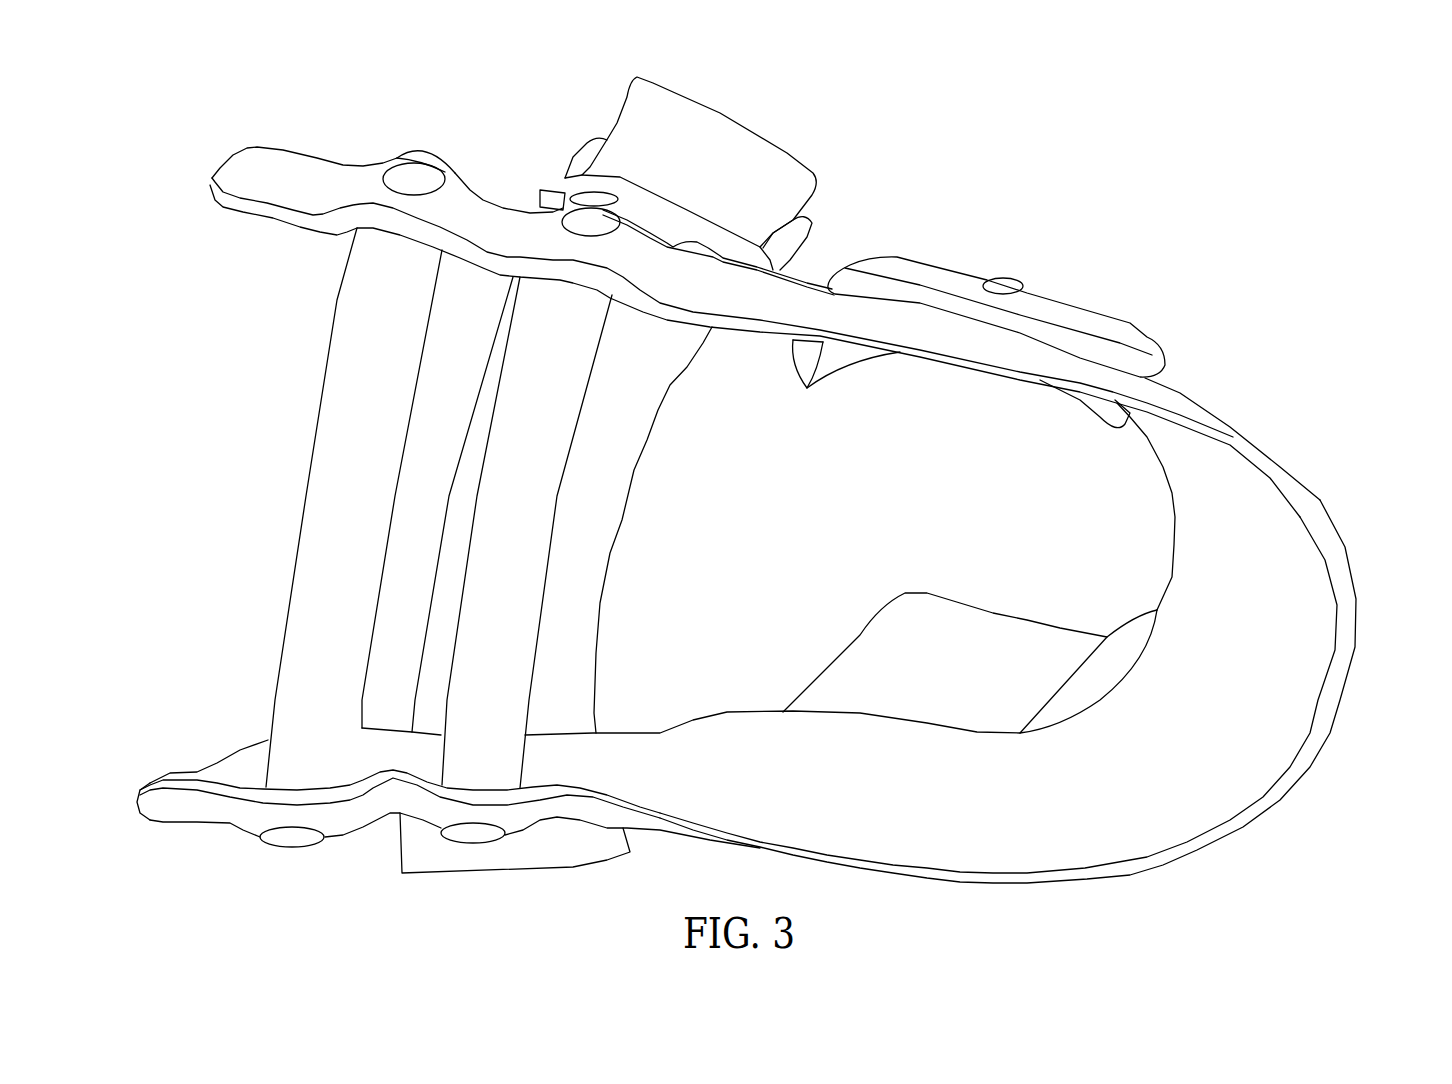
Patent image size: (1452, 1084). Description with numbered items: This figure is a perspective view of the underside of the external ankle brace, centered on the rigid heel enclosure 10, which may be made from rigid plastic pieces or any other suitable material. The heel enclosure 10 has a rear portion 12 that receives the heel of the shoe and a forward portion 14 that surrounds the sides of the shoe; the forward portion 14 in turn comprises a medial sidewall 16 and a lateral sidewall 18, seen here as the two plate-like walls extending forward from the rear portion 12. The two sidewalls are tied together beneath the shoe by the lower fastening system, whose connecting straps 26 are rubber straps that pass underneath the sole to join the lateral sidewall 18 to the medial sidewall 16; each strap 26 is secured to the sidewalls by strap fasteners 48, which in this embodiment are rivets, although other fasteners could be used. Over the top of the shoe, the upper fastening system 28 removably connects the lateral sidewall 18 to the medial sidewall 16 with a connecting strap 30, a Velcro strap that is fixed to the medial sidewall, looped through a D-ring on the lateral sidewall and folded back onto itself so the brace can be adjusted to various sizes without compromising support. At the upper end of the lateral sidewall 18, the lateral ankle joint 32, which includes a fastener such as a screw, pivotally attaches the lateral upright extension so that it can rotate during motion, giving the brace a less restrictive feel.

The rigid heel enclosure 10 is at (1362, 668).
The rear portion 12 is at (1002, 820).
The forward portion 14 is at (378, 752).
The medial sidewall 16 is at (556, 781).
The lateral sidewall 18 is at (504, 229).
The connecting strap 26 is at (320, 490).
The upper fastening system 28 is at (747, 124).
The connecting strap 30 is at (588, 534).
The lateral ankle joint 32 is at (1078, 300).
The strap fastener 48 is at (415, 182).